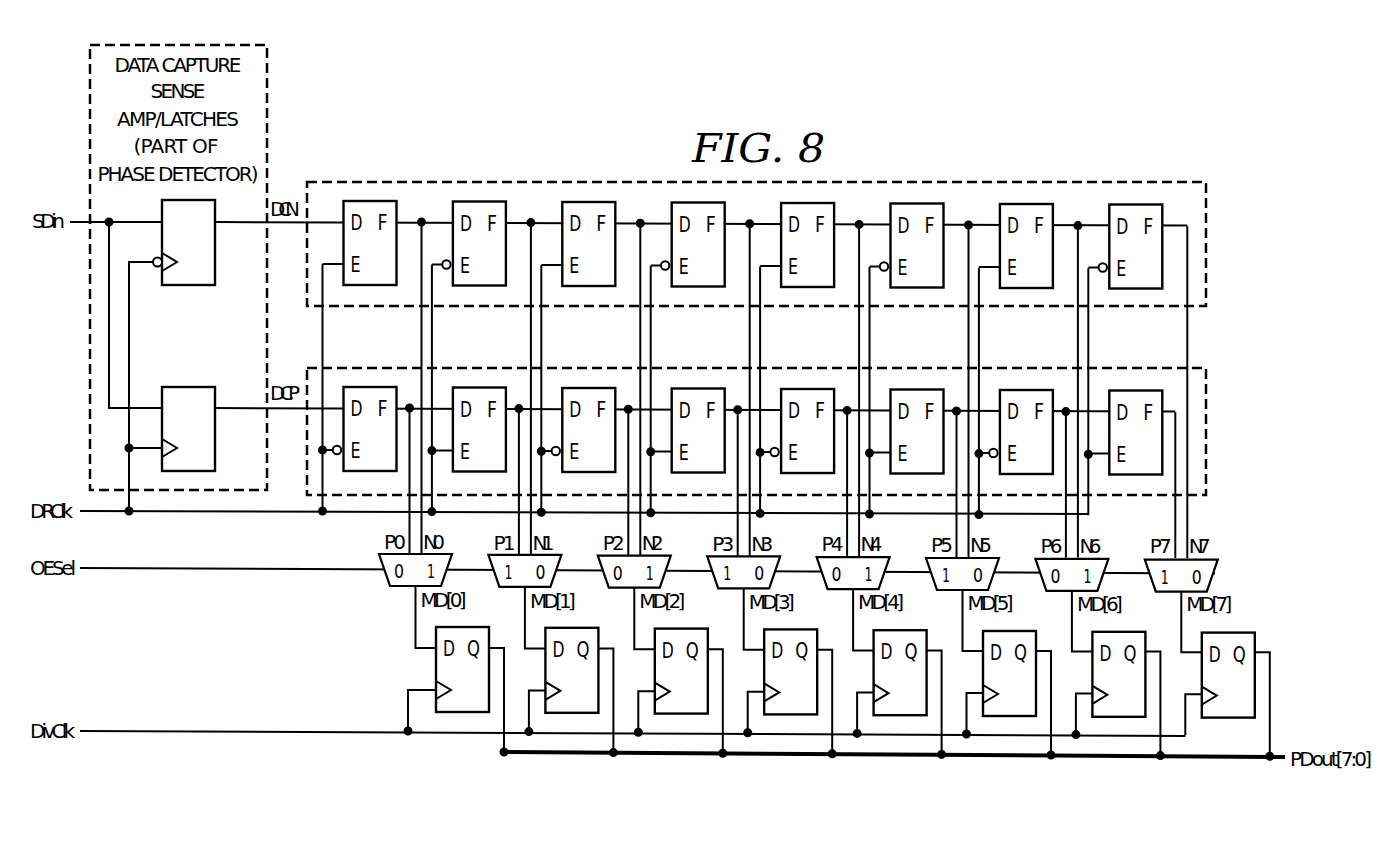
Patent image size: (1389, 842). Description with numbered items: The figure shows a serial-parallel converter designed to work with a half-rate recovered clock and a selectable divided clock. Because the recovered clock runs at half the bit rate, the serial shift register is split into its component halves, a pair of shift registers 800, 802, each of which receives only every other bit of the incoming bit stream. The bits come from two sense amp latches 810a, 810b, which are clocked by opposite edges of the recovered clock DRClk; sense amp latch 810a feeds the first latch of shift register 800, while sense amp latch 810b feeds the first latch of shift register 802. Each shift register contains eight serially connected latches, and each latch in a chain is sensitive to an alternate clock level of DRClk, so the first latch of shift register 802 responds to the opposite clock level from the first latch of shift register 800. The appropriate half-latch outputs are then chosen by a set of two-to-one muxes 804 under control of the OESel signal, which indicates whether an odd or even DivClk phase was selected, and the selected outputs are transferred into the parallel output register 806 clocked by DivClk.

The shift register 800 is at (1207, 246).
The shift register 802 is at (1207, 434).
The 2:1 muxes 804 is at (370, 583).
The output flip-flops 806 is at (412, 671).
The sense amp latch 810a is at (187, 286).
The sense amp latch 810b is at (187, 387).